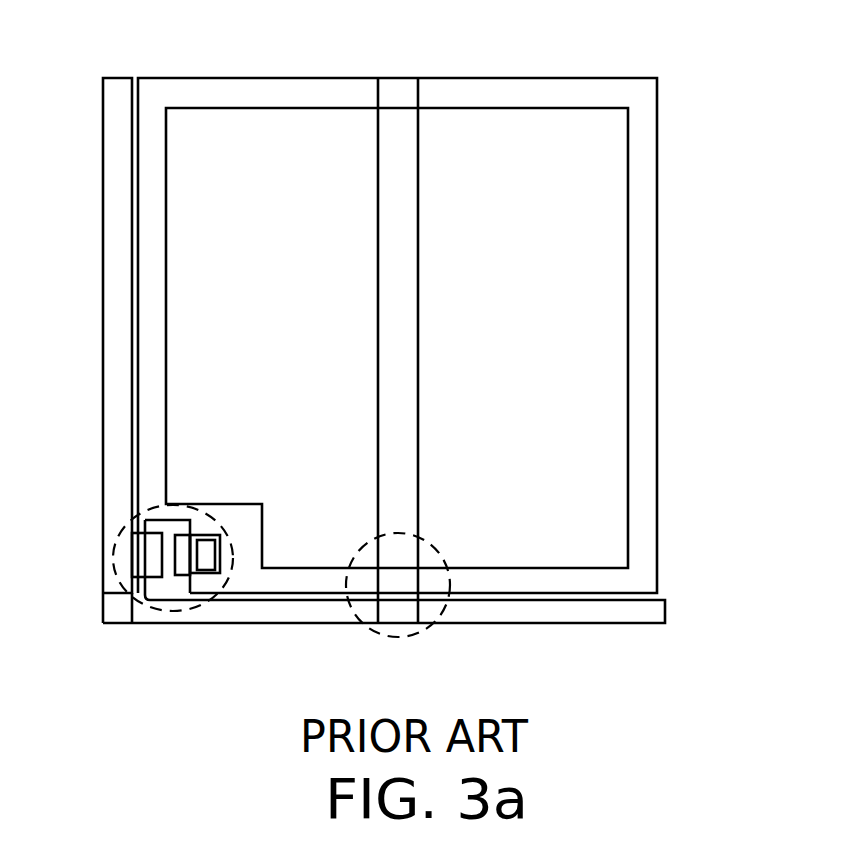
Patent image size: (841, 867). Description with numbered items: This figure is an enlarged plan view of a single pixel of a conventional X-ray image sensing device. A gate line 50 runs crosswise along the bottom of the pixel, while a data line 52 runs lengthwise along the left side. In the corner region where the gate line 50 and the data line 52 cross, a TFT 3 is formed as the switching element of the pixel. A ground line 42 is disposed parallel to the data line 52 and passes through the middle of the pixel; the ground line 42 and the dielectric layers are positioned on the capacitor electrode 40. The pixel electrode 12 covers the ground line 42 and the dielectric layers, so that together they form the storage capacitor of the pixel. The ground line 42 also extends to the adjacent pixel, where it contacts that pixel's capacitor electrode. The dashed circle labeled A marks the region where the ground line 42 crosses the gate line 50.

The pixel electrode 12 is at (585, 78).
The capacitor electrode 40 is at (628, 148).
The ground line 42 is at (380, 174).
The gate line 50 is at (577, 617).
The data line 52 is at (111, 355).
The TFT 3 is at (192, 610).
The crossing region of data line and gate line A is at (417, 632).